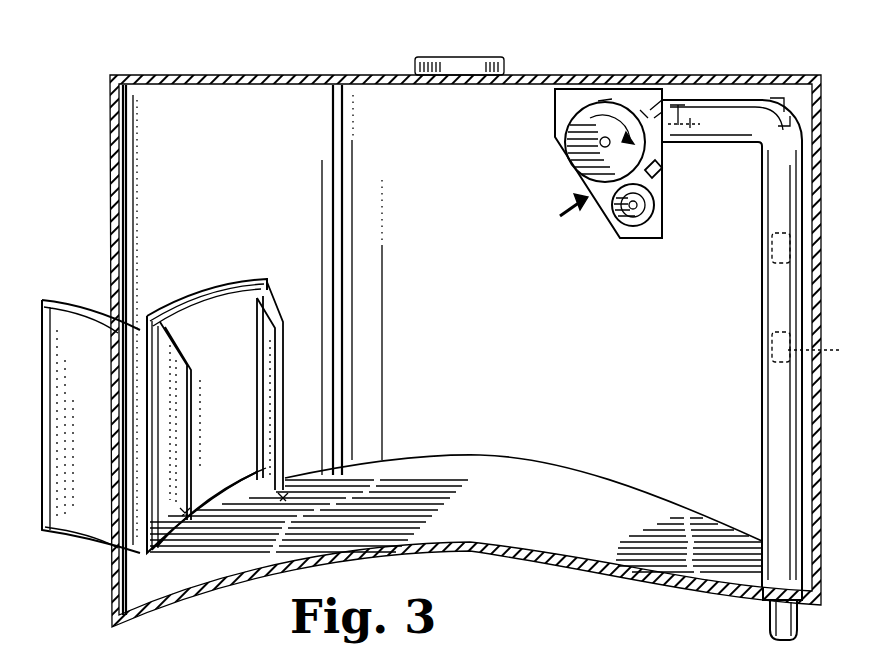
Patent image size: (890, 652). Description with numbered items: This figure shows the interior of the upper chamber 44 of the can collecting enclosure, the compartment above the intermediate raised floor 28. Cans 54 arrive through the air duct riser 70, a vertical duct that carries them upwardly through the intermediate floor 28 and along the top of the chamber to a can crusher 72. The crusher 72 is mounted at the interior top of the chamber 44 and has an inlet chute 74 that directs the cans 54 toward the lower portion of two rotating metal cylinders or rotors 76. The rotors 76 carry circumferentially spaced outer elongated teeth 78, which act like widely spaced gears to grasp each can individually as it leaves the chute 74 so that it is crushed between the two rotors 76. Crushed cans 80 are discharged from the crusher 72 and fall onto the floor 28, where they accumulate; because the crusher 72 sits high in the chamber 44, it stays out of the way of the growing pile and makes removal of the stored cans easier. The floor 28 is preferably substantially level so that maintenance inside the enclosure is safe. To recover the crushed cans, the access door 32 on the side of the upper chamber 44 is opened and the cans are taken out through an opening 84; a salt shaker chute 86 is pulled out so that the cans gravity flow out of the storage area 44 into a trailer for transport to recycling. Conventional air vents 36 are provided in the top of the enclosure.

The intermediate raised floor 28 is at (560, 483).
The access door 32 is at (49, 305).
The air vents 36 is at (415, 62).
The upper chamber 44 is at (480, 361).
The cans 54 is at (771, 95).
The air duct riser 70 is at (790, 514).
The can crusher 72 is at (545, 131).
The inlet chute 74 is at (650, 128).
The rotors 76 is at (610, 196).
The teeth 78 is at (641, 229).
The crushed cans 80 is at (568, 218).
The opening 84 is at (215, 322).
The salt shaker chute 86 is at (283, 325).